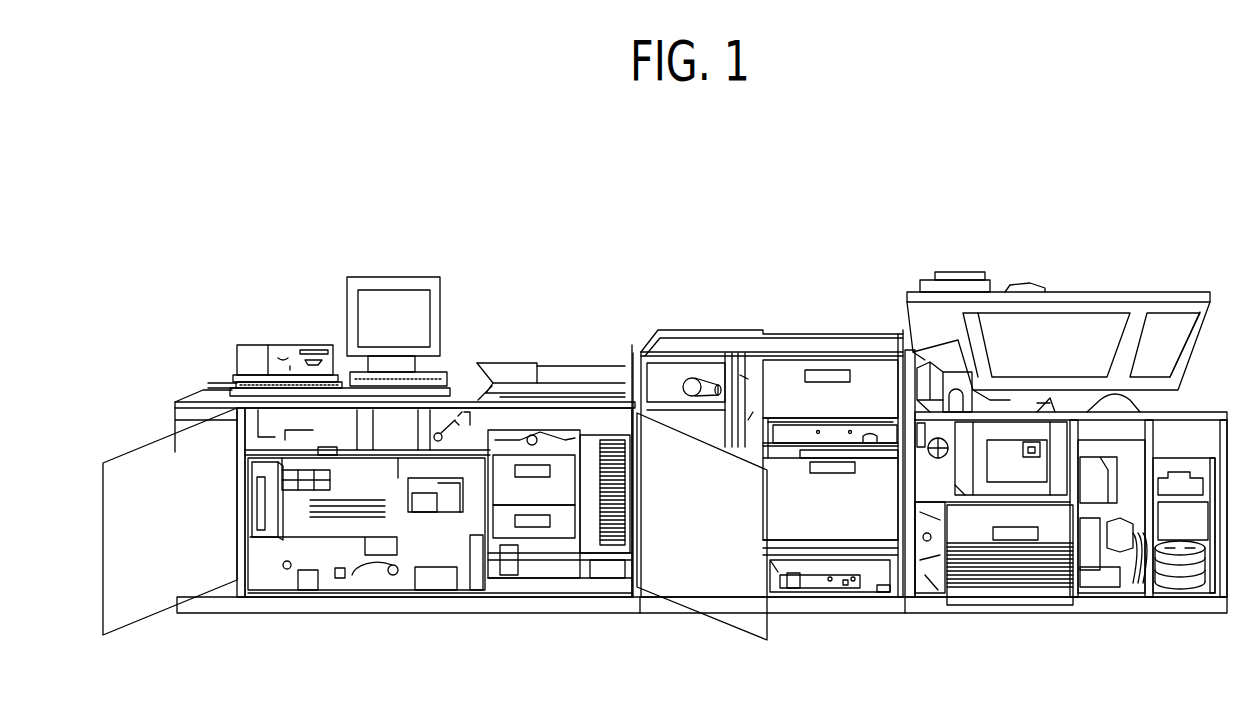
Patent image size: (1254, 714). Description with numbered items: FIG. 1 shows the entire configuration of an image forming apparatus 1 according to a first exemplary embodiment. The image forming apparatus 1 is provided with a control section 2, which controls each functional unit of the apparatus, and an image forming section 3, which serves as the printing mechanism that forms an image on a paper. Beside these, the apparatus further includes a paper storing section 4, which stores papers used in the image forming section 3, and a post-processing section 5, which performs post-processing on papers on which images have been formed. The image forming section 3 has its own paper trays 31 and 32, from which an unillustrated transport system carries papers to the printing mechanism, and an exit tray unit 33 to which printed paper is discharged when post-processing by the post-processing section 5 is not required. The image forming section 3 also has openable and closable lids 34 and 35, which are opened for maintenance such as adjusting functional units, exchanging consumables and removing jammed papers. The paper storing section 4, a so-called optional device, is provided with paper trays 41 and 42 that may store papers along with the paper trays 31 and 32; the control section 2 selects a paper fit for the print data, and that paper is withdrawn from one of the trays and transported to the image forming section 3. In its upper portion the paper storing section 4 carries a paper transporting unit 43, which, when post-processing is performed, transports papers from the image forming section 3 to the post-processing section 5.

The image forming apparatus 1 is at (816, 165).
The control section 2 is at (334, 259).
The image forming section 3 is at (177, 637).
The paper storing section 4 is at (903, 637).
The post-processing section 5 is at (1225, 637).
The paper tray 31 is at (560, 523).
The paper tray 32 is at (565, 476).
The exit tray unit 33 is at (613, 523).
The openable and closable lid 34 is at (147, 558).
The openable and closable lid 35 is at (607, 392).
The paper tray 41 is at (868, 522).
The paper tray 42 is at (868, 394).
The paper transporting unit 43 is at (674, 380).